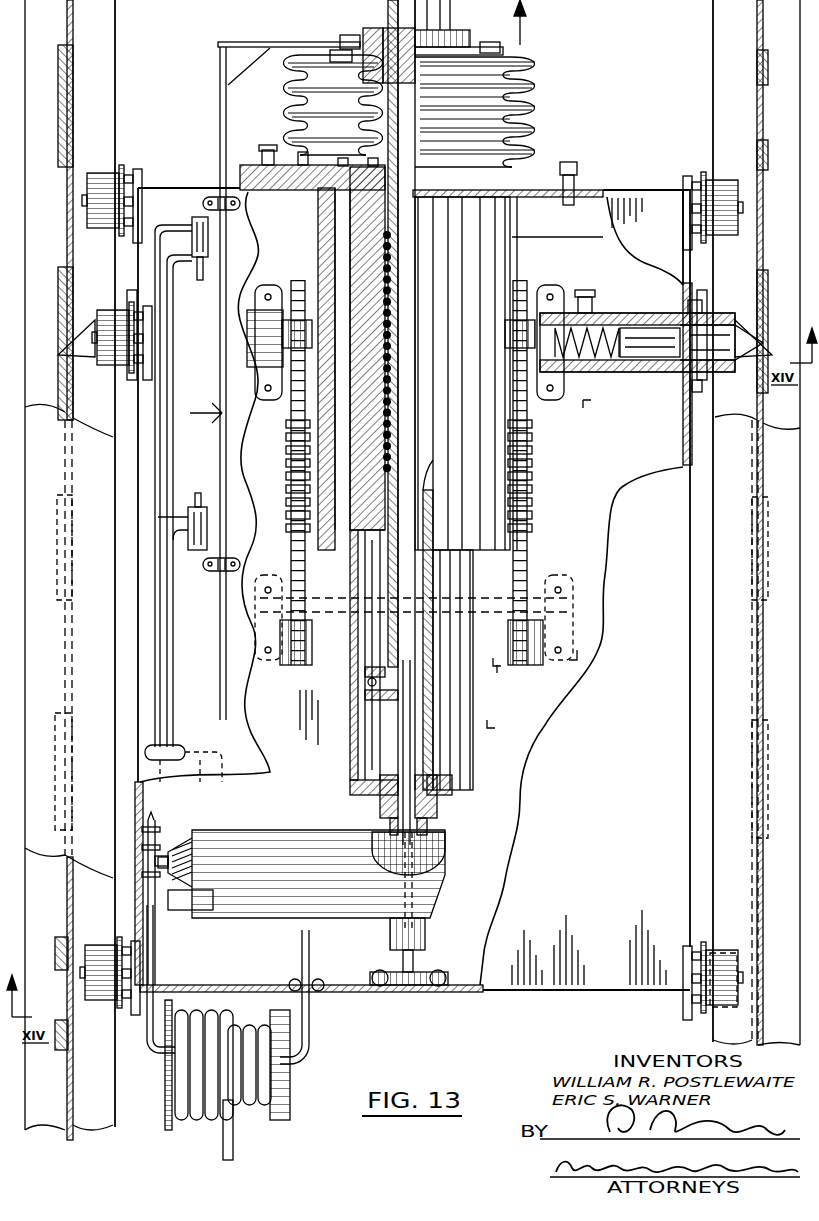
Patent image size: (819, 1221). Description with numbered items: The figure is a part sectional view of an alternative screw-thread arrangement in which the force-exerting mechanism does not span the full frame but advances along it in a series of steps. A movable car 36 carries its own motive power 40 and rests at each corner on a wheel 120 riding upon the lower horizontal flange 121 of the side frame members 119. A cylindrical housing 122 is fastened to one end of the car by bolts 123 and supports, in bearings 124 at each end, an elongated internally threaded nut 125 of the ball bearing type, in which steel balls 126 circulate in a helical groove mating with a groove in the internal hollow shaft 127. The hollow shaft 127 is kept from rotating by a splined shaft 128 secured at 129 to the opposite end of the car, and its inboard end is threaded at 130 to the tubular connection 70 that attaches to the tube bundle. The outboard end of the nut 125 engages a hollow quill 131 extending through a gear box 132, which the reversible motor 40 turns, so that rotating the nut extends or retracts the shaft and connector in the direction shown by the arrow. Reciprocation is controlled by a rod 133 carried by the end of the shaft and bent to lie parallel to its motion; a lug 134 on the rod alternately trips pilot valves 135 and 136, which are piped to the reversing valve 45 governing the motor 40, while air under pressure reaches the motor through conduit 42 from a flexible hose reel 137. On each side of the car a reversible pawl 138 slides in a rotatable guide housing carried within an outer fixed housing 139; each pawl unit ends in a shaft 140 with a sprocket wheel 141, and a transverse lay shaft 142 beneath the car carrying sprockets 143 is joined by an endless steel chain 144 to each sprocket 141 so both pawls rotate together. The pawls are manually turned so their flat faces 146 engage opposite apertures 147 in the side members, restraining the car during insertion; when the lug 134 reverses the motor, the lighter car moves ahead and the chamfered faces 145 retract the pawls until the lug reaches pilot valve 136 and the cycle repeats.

The car 36 is at (603, 863).
The reversible motor 40 is at (250, 830).
The conduit 42 is at (145, 900).
The reversing valve 45 is at (185, 925).
The tubular connection 70 is at (455, 22).
The side frame members 119 is at (73, 35).
The wheel 120 is at (103, 173).
The lower horizontal flange 121 is at (116, 58).
The cylindrical housing 122 is at (512, 235).
The bolts 123 is at (566, 165).
The bearings 124 is at (318, 219).
The internally threaded nut 125 is at (392, 365).
The steel balls 126 is at (390, 270).
The hollow shaft 127 is at (398, 235).
The splined shaft 128 is at (400, 745).
The securing point 129 is at (375, 972).
The threaded end 130 is at (370, 20).
The hollow quill 131 is at (437, 825).
The gear box 132 is at (445, 872).
The rod 133 is at (282, 40).
The lug 134 is at (205, 420).
The pilot valve 135 is at (200, 262).
The pilot valve 136 is at (198, 495).
The flexible hose reel 137 is at (168, 1110).
The reversible pawl 138 is at (93, 305).
The outer fixed housing 139 is at (250, 370).
The shaft 140 is at (262, 290).
The sprocket wheel 141 is at (298, 308).
The transverse lay shaft 142 is at (310, 600).
The sprockets 143 is at (295, 665).
The endless steel chain 144 is at (290, 470).
The chamfered face 145 is at (50, 300).
The flat face 146 is at (95, 370).
The apertures 147 is at (67, 80).